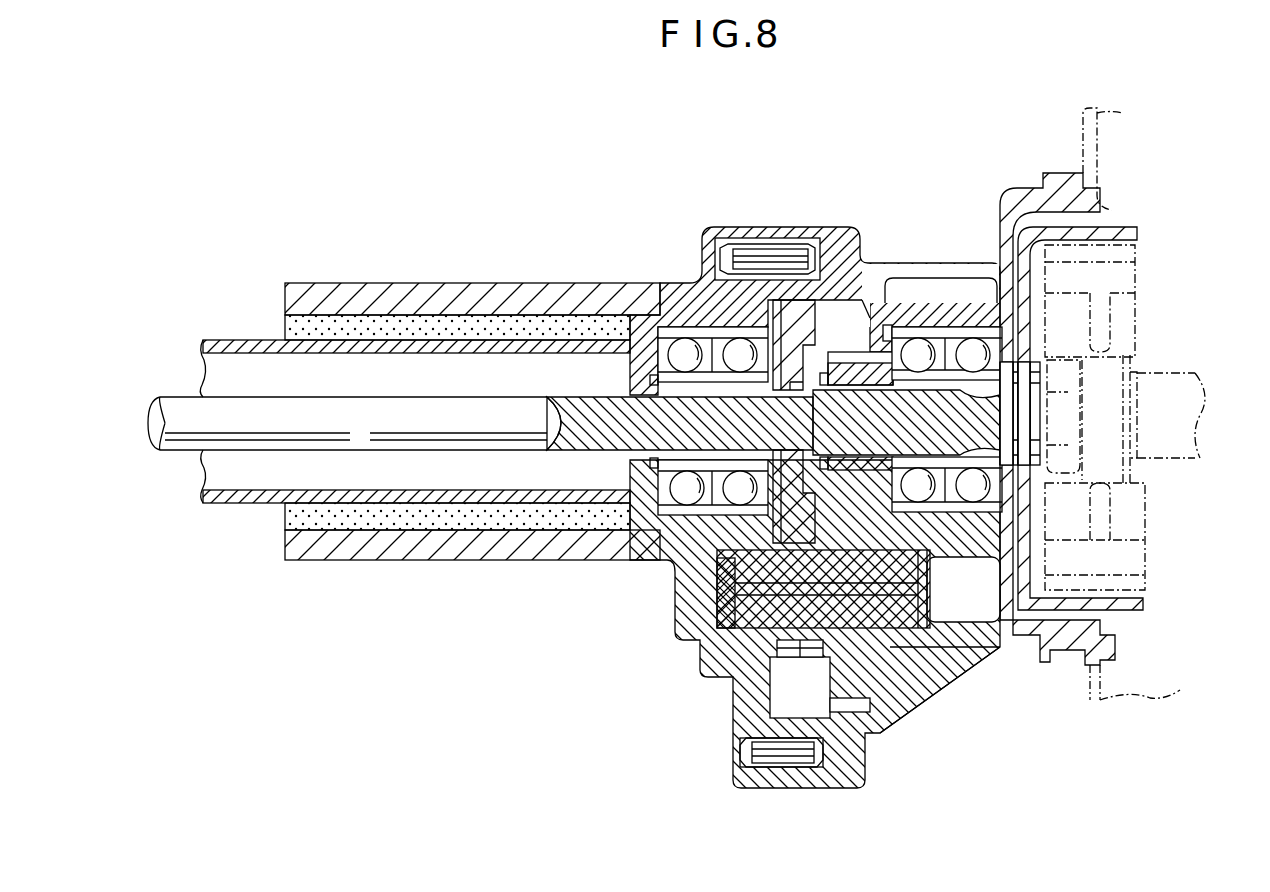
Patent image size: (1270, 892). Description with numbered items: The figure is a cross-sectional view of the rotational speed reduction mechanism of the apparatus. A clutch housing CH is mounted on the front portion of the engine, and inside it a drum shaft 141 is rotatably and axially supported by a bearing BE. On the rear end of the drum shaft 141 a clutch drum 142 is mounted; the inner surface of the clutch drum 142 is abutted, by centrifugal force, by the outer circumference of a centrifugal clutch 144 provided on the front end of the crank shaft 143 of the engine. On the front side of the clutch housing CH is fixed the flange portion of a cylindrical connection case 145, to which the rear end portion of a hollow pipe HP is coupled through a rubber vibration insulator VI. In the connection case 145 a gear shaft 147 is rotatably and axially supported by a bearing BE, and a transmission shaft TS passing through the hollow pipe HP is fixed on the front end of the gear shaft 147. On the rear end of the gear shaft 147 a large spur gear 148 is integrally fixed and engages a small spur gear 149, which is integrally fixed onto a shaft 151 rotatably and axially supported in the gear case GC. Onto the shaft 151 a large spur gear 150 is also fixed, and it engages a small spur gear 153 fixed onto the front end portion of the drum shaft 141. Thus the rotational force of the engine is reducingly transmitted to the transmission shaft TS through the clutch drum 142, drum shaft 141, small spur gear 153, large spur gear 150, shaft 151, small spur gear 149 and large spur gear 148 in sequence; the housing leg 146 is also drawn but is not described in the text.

The hollow pipe HP is at (222, 343).
The rubber vibration insulator VI is at (338, 322).
The transmission shaft TS is at (476, 432).
The gear case GC is at (707, 720).
The clutch housing CH is at (1005, 195).
The bearing BE is at (920, 345).
The drum shaft 141 is at (1035, 400).
The clutch drum 142 is at (1115, 225).
The crank shaft 143 is at (1178, 378).
The centrifugal clutch 144 is at (1140, 522).
The cylindrical connection case 145 is at (458, 292).
The housing leg 146 is at (733, 700).
The gear shaft 147 is at (655, 350).
The large spur gear 148 is at (792, 318).
The small spur gear 149 is at (865, 745).
The large spur gear 150 is at (855, 690).
The shaft 151 is at (908, 625).
The small spur gear 153 is at (856, 365).